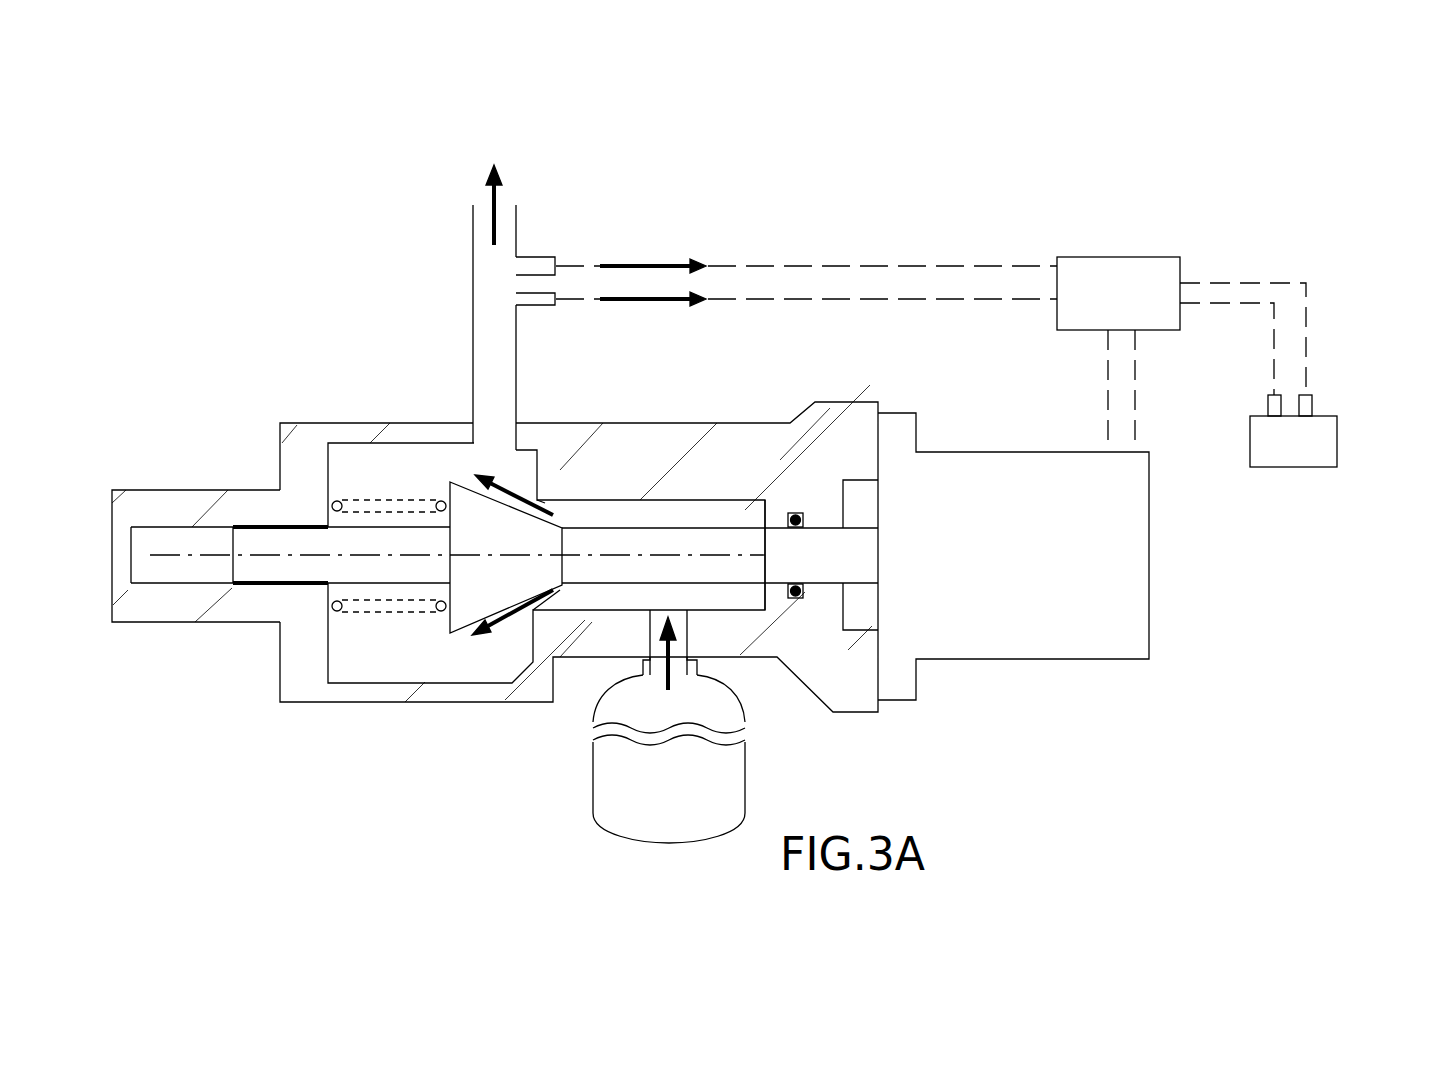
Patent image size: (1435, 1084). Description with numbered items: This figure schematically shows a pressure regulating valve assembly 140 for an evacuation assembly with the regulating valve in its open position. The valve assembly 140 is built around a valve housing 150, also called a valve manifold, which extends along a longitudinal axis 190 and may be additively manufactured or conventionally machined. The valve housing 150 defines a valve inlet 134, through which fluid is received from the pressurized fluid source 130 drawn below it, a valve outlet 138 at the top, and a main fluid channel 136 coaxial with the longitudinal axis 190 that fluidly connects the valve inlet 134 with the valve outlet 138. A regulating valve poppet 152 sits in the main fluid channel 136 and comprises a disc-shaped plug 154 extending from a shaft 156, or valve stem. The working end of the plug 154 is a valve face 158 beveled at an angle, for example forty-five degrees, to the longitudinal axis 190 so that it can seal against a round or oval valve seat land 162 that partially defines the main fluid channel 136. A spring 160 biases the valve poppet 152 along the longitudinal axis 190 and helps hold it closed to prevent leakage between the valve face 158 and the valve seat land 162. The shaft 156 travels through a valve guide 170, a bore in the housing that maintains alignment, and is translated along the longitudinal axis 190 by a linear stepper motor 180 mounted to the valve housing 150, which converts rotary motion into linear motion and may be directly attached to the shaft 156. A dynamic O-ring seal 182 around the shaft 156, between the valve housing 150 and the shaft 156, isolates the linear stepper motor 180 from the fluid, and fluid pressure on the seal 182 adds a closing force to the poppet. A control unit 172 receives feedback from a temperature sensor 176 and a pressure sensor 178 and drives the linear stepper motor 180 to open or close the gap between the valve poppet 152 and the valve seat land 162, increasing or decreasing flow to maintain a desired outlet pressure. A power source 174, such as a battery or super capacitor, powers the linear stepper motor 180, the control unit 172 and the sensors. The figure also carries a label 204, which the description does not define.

The pressurized fluid source 130 is at (690, 794).
The valve inlet 134 is at (678, 676).
The main fluid channel 136 is at (615, 513).
The valve outlet 138 is at (505, 213).
The valve assembly 140 is at (240, 312).
The valve housing 150 is at (633, 423).
The regulating valve poppet 152 is at (700, 505).
The plug 154 is at (448, 493).
The shaft 156 is at (735, 528).
The valve face 158 is at (465, 487).
The spring 160 is at (402, 612).
The valve seat land 162 is at (523, 607).
The valve guide 170 is at (193, 585).
The control unit 172 is at (1128, 258).
The power source 174 is at (1337, 433).
The temperature sensor 176 is at (530, 257).
The pressure sensor 178 is at (537, 305).
The linear stepper motor 180 is at (1007, 460).
The dynamic O-ring seal 182 is at (795, 513).
The longitudinal axis 190 is at (208, 555).
The flow gap 204 is at (550, 496).